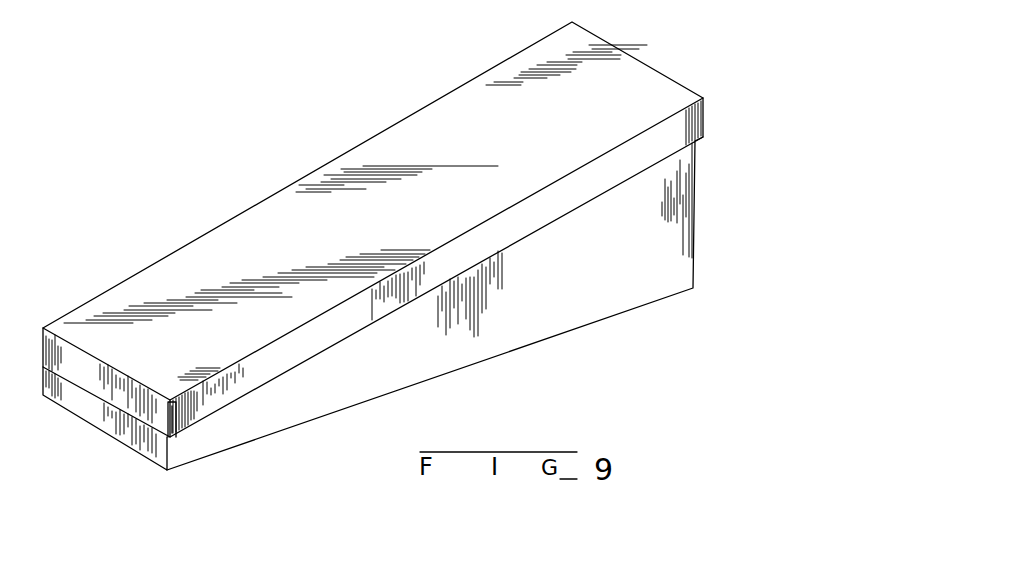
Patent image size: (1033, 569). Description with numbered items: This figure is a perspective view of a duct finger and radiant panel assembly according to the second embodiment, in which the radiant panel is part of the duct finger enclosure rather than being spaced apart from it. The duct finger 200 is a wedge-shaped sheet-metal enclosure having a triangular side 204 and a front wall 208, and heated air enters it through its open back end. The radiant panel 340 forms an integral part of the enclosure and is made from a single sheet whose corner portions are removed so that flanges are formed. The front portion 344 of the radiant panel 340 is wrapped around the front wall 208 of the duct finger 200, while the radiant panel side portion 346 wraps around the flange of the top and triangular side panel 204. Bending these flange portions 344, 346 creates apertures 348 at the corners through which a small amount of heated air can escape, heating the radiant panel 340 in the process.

The duct finger 200 is at (664, 331).
The triangular side 204 is at (540, 310).
The front wall 208 is at (122, 427).
The radiant panel 340 is at (300, 190).
The front portion 344 is at (105, 385).
The radiant panel side portion 346 is at (247, 378).
The apertures 348 is at (37, 321).